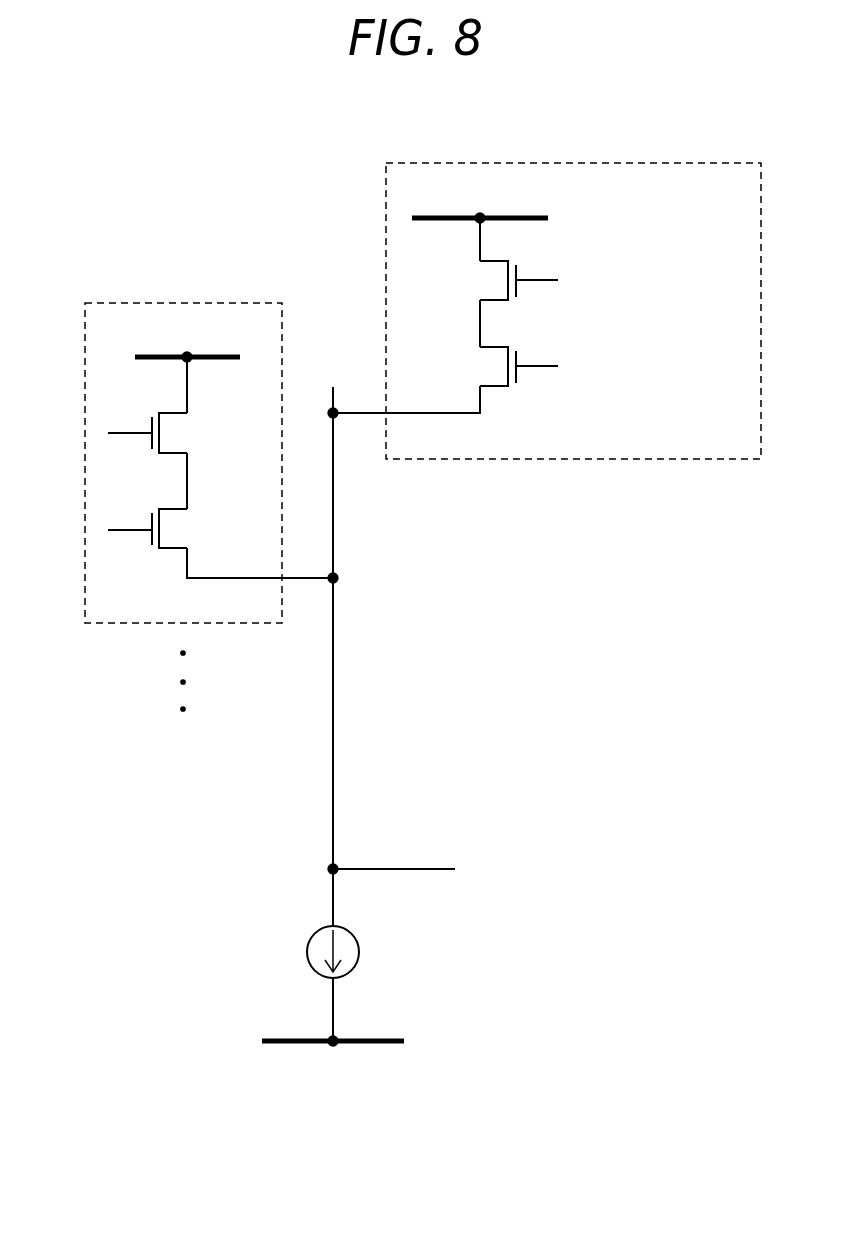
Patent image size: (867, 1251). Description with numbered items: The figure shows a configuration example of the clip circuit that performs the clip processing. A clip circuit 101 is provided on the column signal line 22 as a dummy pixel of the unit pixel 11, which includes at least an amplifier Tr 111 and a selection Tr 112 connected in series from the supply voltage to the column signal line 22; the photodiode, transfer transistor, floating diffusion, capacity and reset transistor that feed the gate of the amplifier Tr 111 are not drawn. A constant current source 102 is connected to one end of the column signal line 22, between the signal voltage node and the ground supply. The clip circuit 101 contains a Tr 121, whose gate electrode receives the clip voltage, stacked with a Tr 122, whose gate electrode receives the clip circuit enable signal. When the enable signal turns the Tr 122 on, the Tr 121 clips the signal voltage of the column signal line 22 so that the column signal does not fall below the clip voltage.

The unit pixel 11 is at (209, 434).
The column signal line 22 is at (335, 748).
The clip circuit 101 is at (547, 283).
The constant current source 102 is at (359, 950).
The amplifier Tr 111 is at (190, 420).
The selection Tr 112 is at (190, 517).
The Tr (clip transistor) 121 is at (482, 282).
The Tr (clip circuit enable transistor) 122 is at (482, 367).